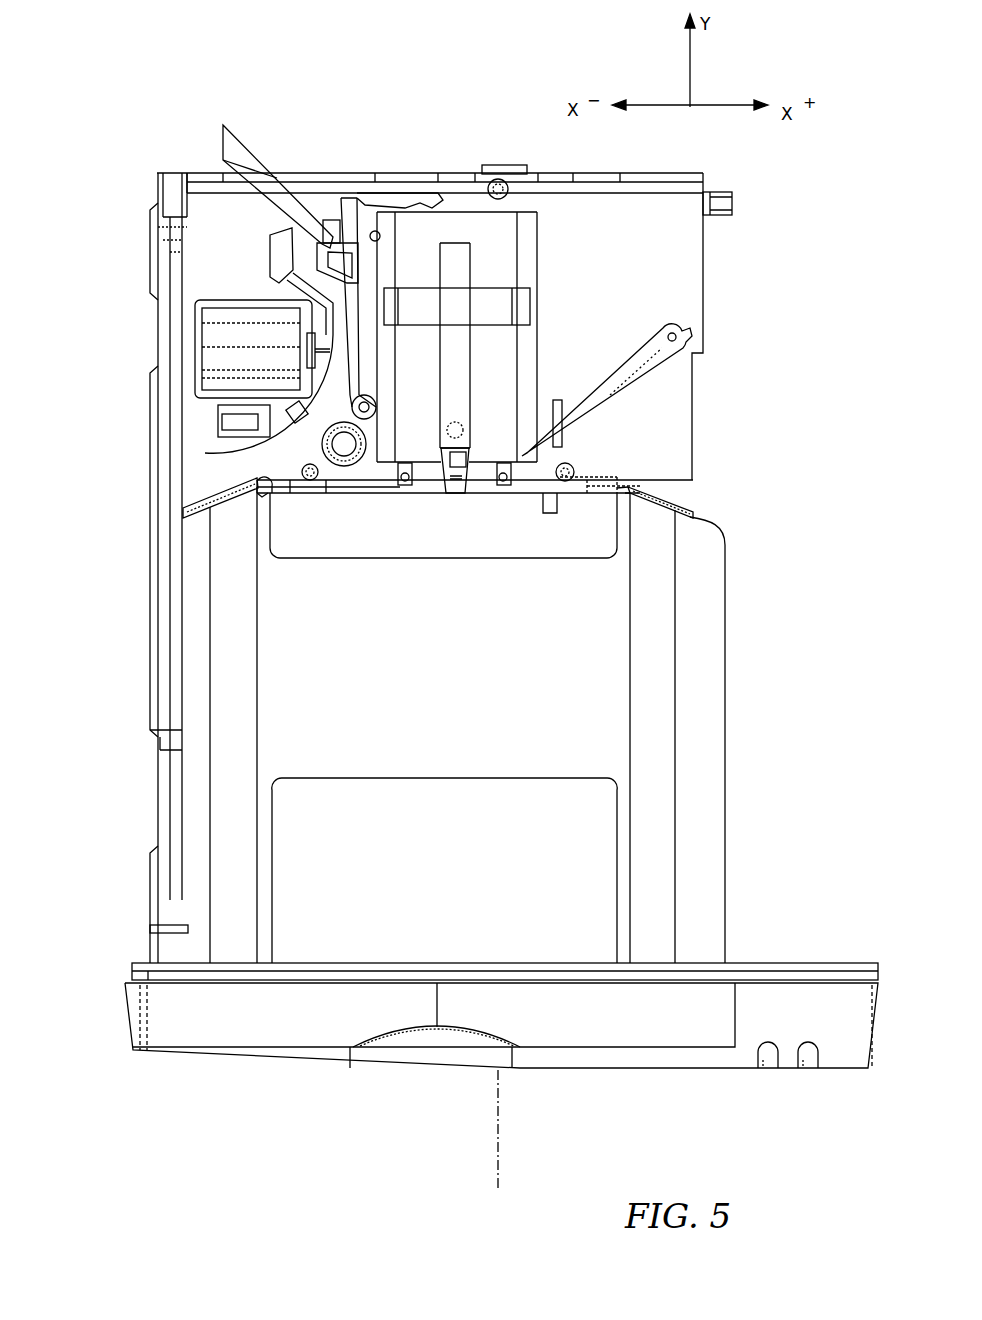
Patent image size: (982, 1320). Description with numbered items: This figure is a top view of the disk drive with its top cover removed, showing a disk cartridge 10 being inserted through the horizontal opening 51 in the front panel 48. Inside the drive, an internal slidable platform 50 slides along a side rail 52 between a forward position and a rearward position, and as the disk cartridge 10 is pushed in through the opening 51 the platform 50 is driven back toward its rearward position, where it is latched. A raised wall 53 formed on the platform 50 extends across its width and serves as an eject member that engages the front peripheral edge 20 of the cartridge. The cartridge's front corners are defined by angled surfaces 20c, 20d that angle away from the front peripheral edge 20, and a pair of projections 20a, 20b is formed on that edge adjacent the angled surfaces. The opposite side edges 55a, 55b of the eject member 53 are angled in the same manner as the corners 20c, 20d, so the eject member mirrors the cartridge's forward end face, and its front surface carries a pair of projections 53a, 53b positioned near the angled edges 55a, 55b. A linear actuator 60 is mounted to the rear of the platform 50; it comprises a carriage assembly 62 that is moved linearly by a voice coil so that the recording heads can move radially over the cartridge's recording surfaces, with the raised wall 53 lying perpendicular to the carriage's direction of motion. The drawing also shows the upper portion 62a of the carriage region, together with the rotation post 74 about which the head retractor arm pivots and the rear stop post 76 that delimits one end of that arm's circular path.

The disk cartridge 10 is at (727, 697).
The front peripheral edge 20 is at (513, 497).
The projection 20a is at (257, 507).
The projection 20b is at (630, 490).
The angled surface 20c is at (253, 498).
The angled surface 20d is at (687, 520).
The front panel 48 is at (200, 1017).
The slidable platform 50 is at (695, 243).
The horizontal opening 51 is at (510, 1048).
The side rail 52 is at (165, 820).
The raised wall 53 is at (600, 473).
The projection 53a is at (262, 450).
The projection 53b is at (623, 480).
The side edge 55a is at (255, 478).
The side edge 55b is at (673, 493).
The linear actuator 60 is at (560, 298).
The carriage assembly 62 is at (467, 357).
The plunger upper portion 62a is at (460, 258).
The rotation post 74 is at (240, 348).
The rear stop post 76 is at (245, 446).